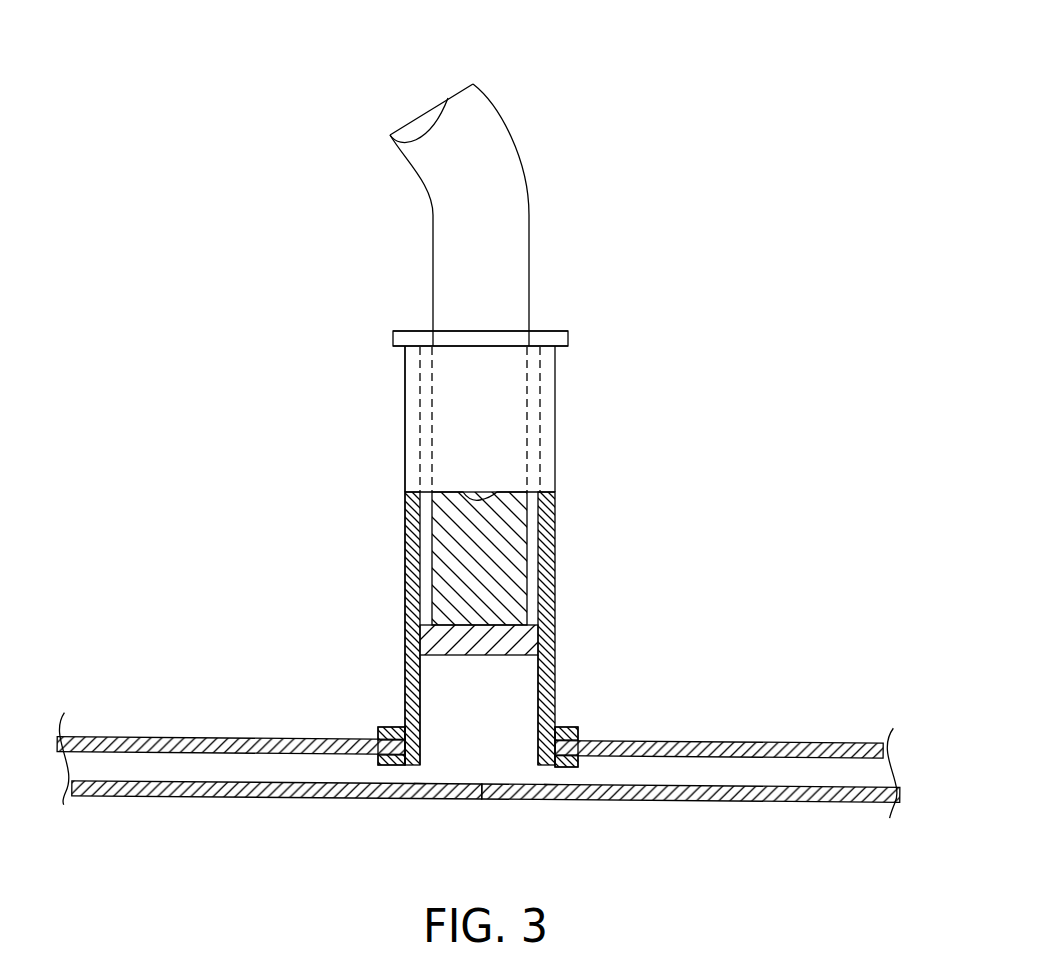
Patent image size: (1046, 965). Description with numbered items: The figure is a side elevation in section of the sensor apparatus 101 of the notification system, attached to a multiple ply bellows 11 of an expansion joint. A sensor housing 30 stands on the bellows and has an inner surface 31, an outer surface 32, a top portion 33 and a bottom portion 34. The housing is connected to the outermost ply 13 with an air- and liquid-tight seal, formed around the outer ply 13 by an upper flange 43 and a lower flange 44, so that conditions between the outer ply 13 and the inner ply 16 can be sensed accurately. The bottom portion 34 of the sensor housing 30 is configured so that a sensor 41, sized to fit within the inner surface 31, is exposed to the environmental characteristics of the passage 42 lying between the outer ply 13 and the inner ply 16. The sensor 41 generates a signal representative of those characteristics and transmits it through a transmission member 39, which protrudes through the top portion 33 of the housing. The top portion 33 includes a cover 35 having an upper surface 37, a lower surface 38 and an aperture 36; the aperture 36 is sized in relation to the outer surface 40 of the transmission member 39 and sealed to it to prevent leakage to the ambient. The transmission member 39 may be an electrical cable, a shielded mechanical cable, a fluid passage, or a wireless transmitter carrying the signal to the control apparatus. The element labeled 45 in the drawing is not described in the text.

The multiple ply bellows 11 is at (747, 740).
The outermost ply 13 is at (218, 737).
The inner ply 16 is at (200, 799).
The sensor housing 30 is at (563, 435).
The inner surface 31 is at (537, 682).
The outer surface 32 is at (403, 467).
The top portion 33 is at (558, 367).
The bottom portion 34 is at (420, 799).
The cover 35 is at (548, 323).
The aperture 36 is at (437, 342).
The upper surface 37 is at (398, 327).
The lower surface 38 is at (398, 348).
The transmission member 39 is at (505, 100).
The outer surface of transmission member 40 is at (530, 215).
The sensor 41 is at (448, 657).
The passage 42 is at (670, 765).
The upper flange 43 is at (567, 727).
The lower flange 44 is at (550, 799).
The left clamp 45 is at (408, 747).
The sensor apparatus 101 is at (650, 457).